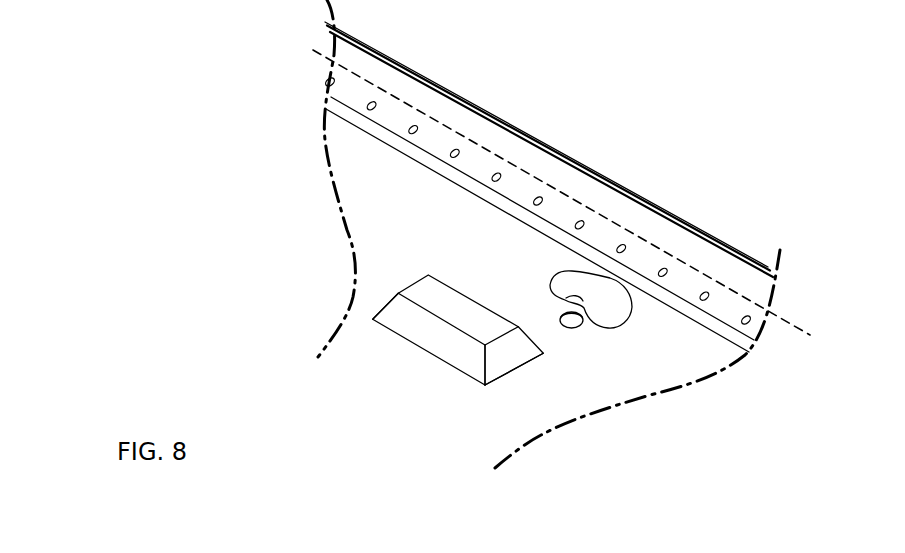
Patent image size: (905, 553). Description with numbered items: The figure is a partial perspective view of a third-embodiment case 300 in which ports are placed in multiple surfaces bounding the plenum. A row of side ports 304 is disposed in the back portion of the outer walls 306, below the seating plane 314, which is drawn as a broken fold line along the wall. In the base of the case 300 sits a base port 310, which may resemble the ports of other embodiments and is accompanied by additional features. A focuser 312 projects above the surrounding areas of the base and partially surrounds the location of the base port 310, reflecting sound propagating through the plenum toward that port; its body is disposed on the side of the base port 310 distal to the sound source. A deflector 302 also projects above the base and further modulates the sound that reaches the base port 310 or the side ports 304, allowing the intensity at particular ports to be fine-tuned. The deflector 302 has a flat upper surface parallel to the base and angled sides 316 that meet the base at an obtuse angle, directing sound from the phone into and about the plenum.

The case 300 is at (268, 217).
The deflector 302 is at (458, 318).
The side ports 304 is at (497, 175).
The outer walls 306 is at (597, 238).
The base port 310 is at (572, 328).
The focuser 312 is at (605, 300).
The seating plane 314 is at (672, 255).
The angled sides 316 is at (401, 322).